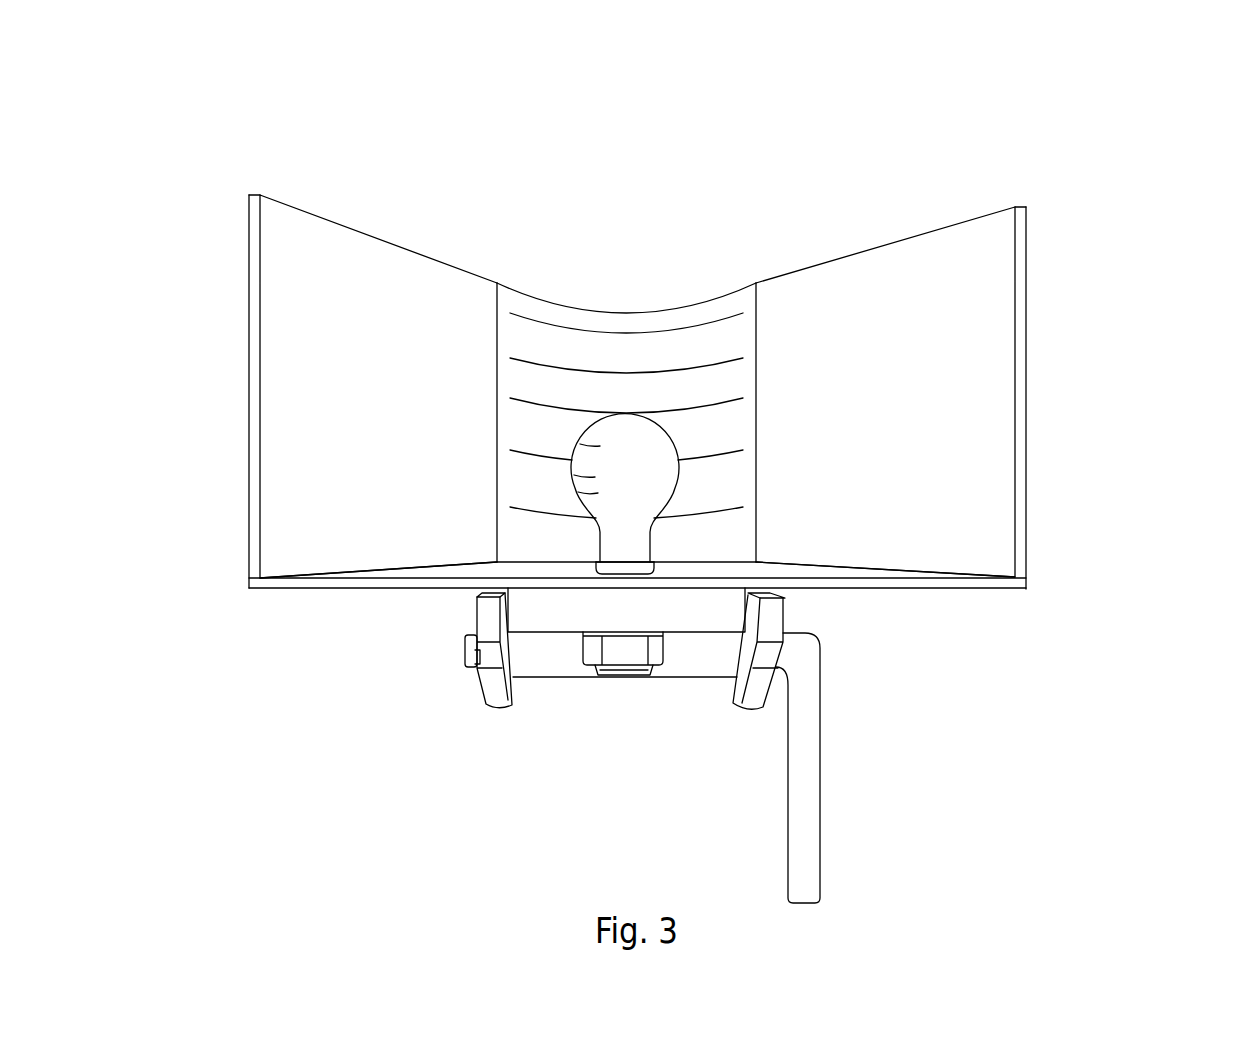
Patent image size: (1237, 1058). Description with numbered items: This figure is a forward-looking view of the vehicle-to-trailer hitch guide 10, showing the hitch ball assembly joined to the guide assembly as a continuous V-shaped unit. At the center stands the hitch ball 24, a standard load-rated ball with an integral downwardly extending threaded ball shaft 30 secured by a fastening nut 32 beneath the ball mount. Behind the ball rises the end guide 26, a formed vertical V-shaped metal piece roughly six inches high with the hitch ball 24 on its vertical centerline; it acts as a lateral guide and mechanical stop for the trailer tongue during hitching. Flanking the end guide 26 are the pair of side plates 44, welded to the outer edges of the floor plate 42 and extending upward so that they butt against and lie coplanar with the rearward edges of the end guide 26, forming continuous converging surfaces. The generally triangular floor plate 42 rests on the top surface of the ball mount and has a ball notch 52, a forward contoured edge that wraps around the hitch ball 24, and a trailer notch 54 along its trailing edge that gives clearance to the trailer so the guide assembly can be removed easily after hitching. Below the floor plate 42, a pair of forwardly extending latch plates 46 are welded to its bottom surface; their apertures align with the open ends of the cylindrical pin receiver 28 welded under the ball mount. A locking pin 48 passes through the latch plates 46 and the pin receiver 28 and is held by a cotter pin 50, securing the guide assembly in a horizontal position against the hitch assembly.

The vehicle-to-trailer hitch guide 10 is at (1118, 198).
The hitch ball 24 is at (637, 430).
The end guide 26 is at (625, 358).
The pin receiver 28 is at (535, 655).
The threaded ball shaft 30 is at (607, 670).
The fastening nut 32 is at (622, 647).
The floor plate 42 is at (445, 570).
The side plates 44 is at (285, 502).
The latch plates 46 is at (498, 695).
The locking pin 48 is at (465, 650).
The cotter pin 50 is at (478, 662).
The ball notch 52 is at (598, 562).
The trailer notch 54 is at (340, 587).